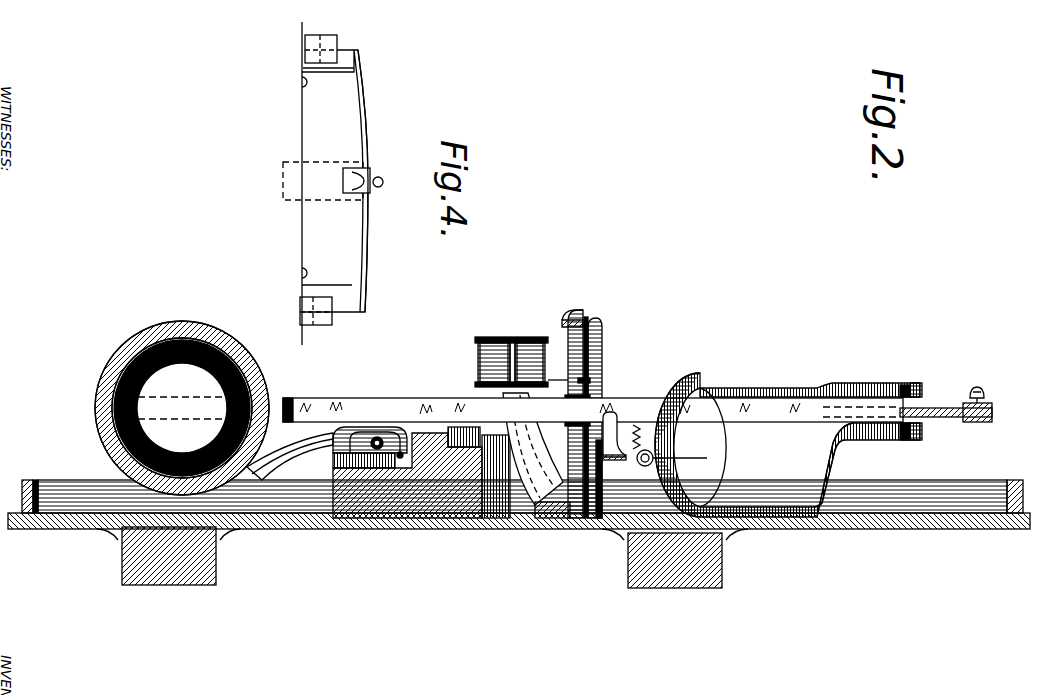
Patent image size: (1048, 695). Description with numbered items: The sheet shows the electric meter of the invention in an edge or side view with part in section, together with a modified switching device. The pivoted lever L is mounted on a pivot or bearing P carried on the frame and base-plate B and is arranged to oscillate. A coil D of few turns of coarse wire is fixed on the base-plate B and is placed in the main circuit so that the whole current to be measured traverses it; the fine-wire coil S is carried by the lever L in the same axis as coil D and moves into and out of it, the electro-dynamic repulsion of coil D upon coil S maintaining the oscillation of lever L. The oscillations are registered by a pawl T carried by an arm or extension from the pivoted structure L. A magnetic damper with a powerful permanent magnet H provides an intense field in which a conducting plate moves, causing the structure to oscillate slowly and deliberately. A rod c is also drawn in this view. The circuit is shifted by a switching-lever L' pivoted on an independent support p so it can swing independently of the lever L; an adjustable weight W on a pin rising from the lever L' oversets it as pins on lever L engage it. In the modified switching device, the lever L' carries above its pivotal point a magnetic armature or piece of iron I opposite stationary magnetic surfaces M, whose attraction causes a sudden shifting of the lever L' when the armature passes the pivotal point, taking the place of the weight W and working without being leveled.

In FIG. 2, the base-plate B is at (398, 530).
In FIG. 2, the coil D is at (187, 322).
In FIG. 2, the coil S is at (182, 408).
In FIG. 2, the pivoted lever L is at (593, 384).
In FIG. 2, the pawl T is at (563, 382).
In FIG. 2, the pivot P is at (580, 320).
In FIG. 2, the permanent magnet H is at (762, 373).
In FIG. 2, the adjustable weight W is at (652, 439).
In FIG. 2, the rod c is at (946, 411).
In FIG. 2, the independent support p is at (591, 533).
In FIG. 4, the stationary magnetic surfaces M is at (347, 163).
In FIG. 4, the magnetic armature I is at (383, 182).
In FIG. 4, the switching-lever L' is at (378, 181).